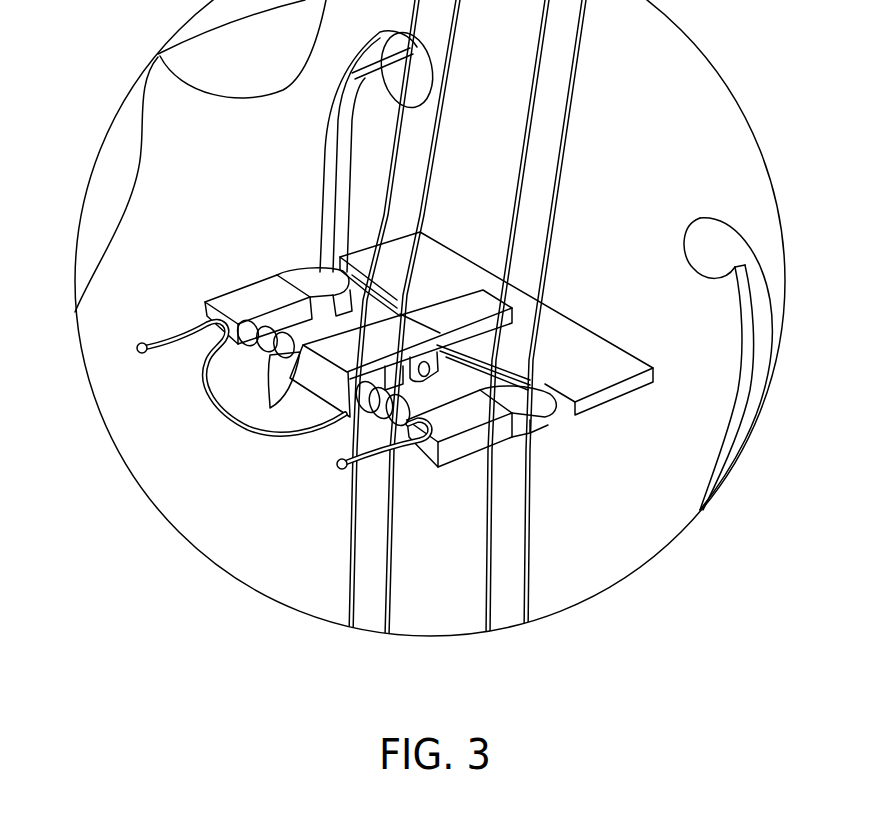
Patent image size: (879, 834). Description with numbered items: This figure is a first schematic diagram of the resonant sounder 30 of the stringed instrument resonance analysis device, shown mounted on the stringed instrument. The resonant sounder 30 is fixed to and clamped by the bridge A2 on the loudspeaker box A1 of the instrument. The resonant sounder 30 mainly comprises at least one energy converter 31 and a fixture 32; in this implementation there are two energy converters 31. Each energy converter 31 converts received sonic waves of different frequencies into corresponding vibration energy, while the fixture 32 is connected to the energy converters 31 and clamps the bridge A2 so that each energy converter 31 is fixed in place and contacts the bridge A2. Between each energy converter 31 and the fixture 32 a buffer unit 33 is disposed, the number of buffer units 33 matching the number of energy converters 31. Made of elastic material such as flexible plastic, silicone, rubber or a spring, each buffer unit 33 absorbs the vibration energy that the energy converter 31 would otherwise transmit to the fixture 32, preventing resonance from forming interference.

The loudspeaker box A1 is at (207, 110).
The bridge A2 is at (563, 336).
The resonant sounder 30 is at (384, 388).
The energy converter 31 is at (280, 295).
The fixture 32 is at (328, 377).
The buffer unit 33 is at (282, 352).